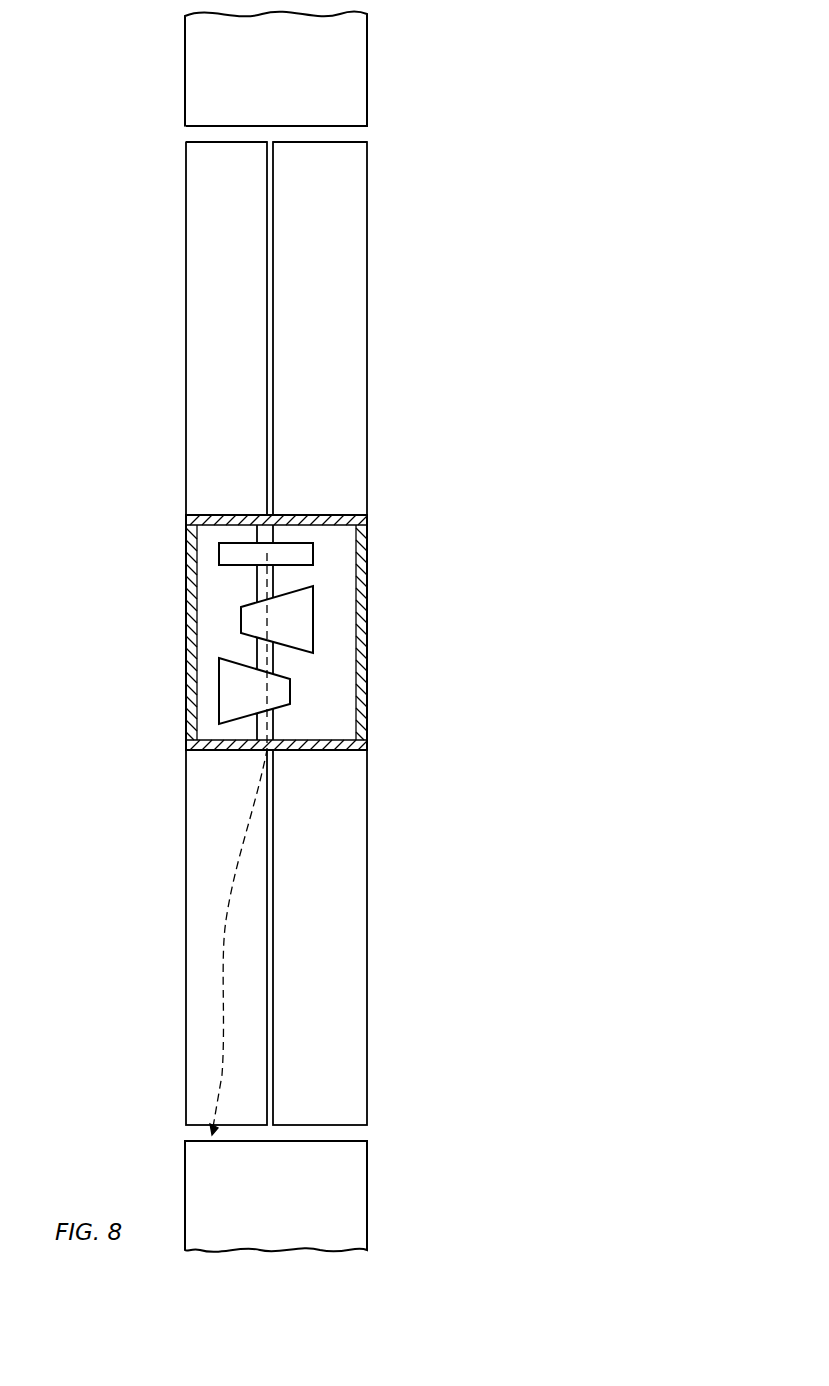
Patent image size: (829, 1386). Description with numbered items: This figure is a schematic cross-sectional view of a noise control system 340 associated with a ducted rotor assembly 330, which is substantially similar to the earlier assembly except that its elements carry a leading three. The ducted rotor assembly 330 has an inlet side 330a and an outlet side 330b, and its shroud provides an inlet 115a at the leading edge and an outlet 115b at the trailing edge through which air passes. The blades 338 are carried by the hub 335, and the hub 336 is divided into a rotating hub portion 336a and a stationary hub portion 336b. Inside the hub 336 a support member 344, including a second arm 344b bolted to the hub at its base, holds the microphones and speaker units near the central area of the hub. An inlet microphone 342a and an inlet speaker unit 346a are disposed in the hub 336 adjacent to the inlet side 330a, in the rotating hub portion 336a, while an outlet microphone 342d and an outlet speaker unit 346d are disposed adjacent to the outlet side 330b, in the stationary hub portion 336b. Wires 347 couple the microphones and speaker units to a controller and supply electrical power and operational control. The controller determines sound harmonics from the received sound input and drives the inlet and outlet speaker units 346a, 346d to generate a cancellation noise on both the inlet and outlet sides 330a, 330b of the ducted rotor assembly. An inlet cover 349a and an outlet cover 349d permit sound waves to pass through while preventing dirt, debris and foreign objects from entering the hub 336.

The noise control system 340 is at (95, 51).
The ducted rotor assembly 330 is at (244, 633).
The inlet side 330a is at (366, 351).
The outlet side 330b is at (186, 351).
The inlet 115a is at (370, 130).
The outlet 115b is at (185, 130).
The hub 335 is at (228, 142).
The blades 338 is at (322, 142).
The hub 336 is at (276, 628).
The rotating hub portion 336a is at (308, 515).
The stationary hub portion 336b is at (238, 515).
The inlet microphone 342a is at (313, 552).
The outlet microphone 342d is at (219, 553).
The support member 344 is at (276, 722).
The second arm 344b is at (241, 600).
The inlet speaker unit 346a is at (241, 628).
The outlet speaker unit 346d is at (219, 690).
The inlet cover 349a is at (367, 693).
The outlet cover 349d is at (190, 728).
The wires 347 is at (215, 965).